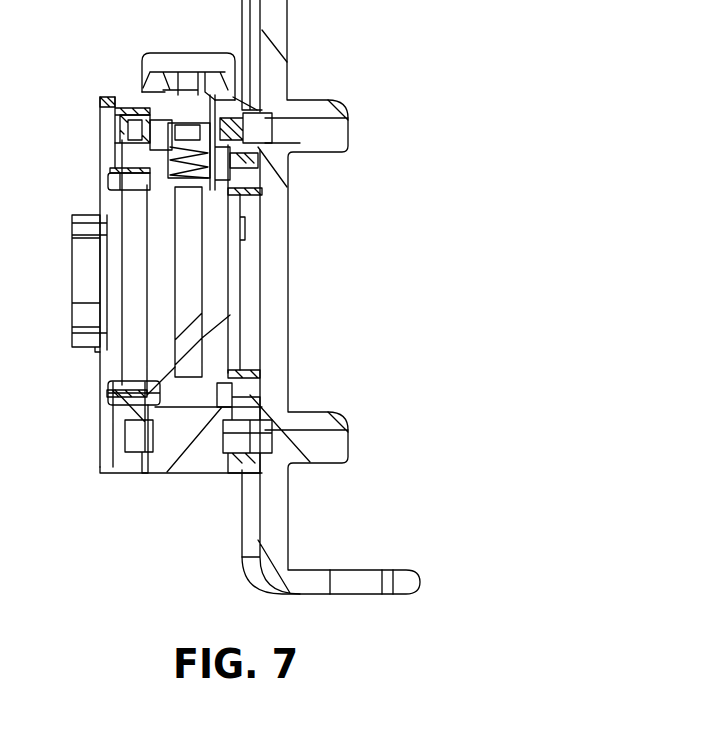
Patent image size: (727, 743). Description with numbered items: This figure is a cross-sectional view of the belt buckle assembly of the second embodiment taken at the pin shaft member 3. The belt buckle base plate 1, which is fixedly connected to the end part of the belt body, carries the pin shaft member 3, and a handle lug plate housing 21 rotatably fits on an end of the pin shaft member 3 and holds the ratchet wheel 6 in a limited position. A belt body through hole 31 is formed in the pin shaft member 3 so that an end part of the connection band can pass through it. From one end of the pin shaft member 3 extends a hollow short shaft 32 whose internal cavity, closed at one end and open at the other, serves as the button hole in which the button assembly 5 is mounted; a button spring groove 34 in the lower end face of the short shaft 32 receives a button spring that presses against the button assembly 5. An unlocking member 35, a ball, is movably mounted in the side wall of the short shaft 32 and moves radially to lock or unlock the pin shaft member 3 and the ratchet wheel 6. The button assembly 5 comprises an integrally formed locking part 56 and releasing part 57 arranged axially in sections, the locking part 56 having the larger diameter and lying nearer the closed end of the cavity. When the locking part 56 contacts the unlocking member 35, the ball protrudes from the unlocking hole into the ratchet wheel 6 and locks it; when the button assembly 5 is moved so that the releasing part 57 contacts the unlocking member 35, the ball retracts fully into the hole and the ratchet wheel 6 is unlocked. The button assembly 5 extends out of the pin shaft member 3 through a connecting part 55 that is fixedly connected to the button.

The belt buckle base plate 1 is at (282, 253).
The pin shaft member 3 is at (160, 305).
The button assembly 5 is at (172, 58).
The ratchet wheel 6 is at (272, 124).
The handle lug plate housing 21 is at (122, 462).
The belt body through hole 31 is at (185, 258).
The short shaft 32 is at (148, 160).
The button spring groove 34 is at (115, 108).
The unlocking member 35 is at (152, 135).
The connecting part 55 is at (143, 66).
The locking part 56 is at (257, 147).
The releasing part 57 is at (236, 90).